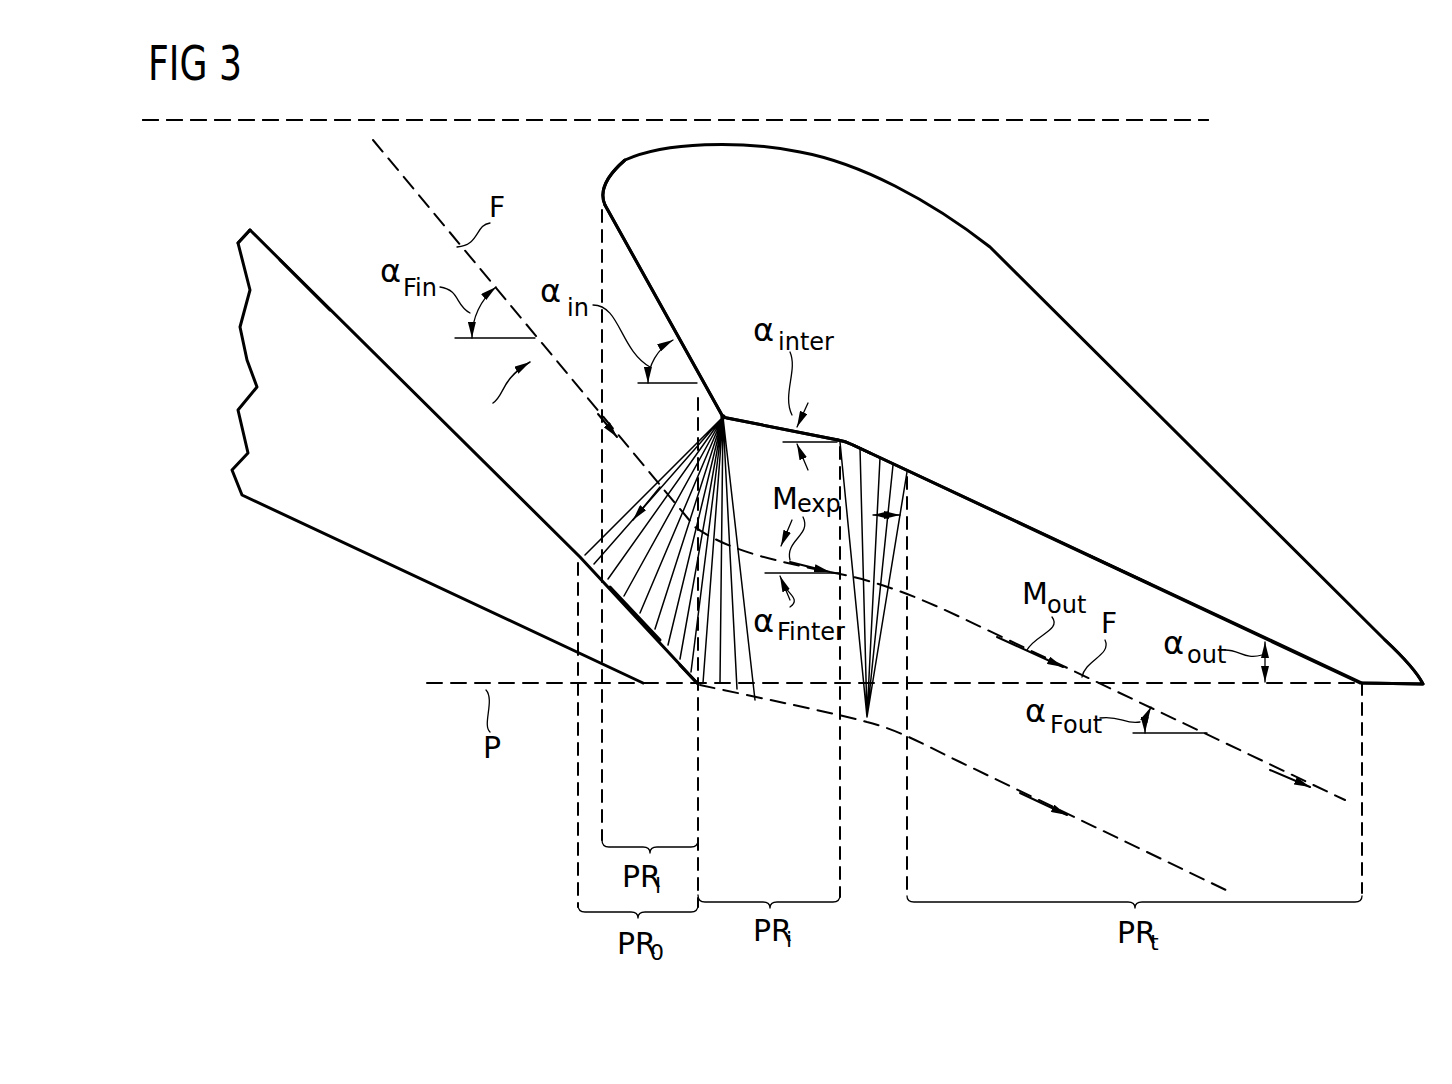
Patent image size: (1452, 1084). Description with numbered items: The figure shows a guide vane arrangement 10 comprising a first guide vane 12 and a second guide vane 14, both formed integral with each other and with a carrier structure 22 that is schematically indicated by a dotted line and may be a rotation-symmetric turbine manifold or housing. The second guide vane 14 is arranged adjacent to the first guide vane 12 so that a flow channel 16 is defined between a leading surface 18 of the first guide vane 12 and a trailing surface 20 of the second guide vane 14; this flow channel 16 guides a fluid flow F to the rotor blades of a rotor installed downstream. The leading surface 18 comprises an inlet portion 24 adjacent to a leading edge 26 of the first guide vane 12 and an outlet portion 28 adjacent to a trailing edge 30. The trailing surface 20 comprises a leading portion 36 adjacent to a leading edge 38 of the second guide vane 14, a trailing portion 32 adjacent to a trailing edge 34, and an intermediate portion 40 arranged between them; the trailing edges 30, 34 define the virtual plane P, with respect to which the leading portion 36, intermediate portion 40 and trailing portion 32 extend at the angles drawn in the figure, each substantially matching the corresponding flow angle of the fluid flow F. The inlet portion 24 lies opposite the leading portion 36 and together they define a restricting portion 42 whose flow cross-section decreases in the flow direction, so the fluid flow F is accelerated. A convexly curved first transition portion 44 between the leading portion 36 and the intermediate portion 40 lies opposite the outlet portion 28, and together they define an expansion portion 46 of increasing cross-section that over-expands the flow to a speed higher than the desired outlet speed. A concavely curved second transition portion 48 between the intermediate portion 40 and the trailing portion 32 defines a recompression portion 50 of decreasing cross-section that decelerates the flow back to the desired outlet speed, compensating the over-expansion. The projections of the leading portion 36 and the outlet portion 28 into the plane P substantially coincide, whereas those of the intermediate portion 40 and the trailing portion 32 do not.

The guide vane arrangement 10 is at (1293, 197).
The first guide vane 12 is at (258, 358).
The second guide vane 14 is at (995, 255).
The flow channel 16 is at (515, 165).
The leading surface 18 is at (285, 250).
The trailing surface 20 is at (975, 505).
The carrier structure 22 is at (1035, 137).
The inlet portion 24 is at (305, 277).
The leading edge 26 is at (248, 228).
The outlet portion 28 is at (641, 604).
The trailing edge 30 is at (703, 690).
The trailing portion 32 is at (1122, 574).
The trailing edge 34 is at (1422, 690).
The leading portion 36 is at (646, 291).
The leading edge 38 is at (605, 185).
The intermediate portion 40 is at (766, 430).
The restricting portion 42 is at (502, 401).
The first transition portion 44 is at (720, 410).
The expansion portion 46 is at (623, 512).
The second transition portion 48 is at (874, 454).
The recompression portion 50 is at (900, 515).